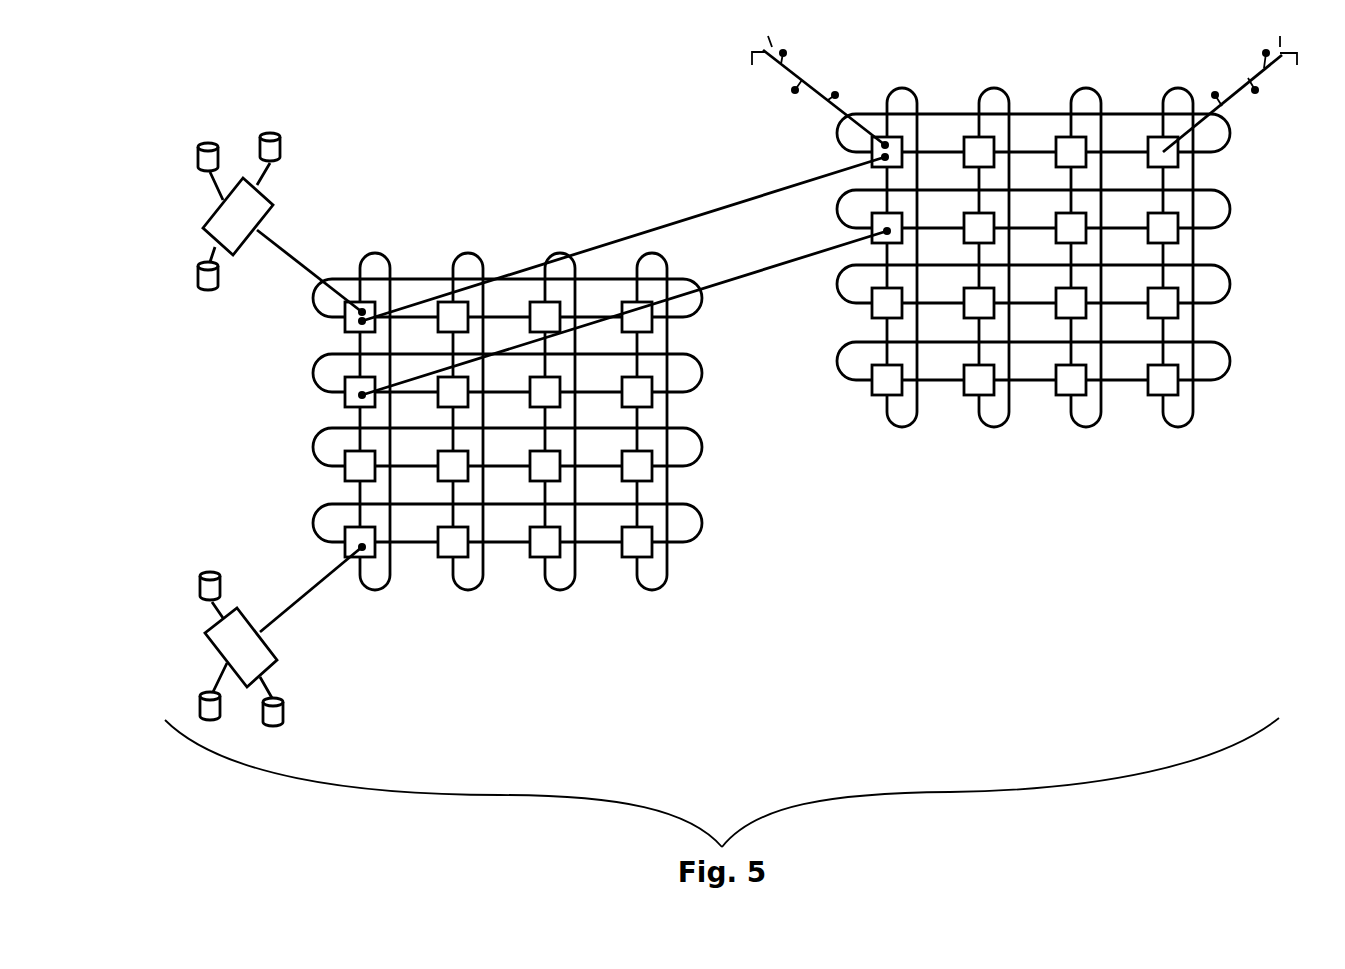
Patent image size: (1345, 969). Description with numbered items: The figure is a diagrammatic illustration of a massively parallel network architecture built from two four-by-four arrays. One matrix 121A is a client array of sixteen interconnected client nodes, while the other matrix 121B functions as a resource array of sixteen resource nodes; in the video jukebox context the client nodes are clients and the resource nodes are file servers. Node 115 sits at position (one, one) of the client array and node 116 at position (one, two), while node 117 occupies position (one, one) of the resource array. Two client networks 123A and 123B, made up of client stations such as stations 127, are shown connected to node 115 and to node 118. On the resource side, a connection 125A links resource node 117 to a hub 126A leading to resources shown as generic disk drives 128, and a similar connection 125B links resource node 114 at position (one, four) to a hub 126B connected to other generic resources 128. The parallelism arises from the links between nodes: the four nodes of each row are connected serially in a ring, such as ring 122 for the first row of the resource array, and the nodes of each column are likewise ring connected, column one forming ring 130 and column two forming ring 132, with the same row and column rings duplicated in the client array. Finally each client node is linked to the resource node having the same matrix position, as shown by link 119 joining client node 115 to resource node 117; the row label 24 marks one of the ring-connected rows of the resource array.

The row line 24 is at (332, 354).
The resource node 114 is at (348, 527).
The client node 115 is at (892, 134).
The client node 116 is at (995, 133).
The resource node 117 is at (378, 310).
The client node 118 is at (1150, 154).
The link 119 is at (737, 200).
The matrix 121A is at (1018, 477).
The matrix 121B is at (495, 200).
The ring 122 is at (330, 277).
The client network 123A is at (792, 68).
The client network 123B is at (1263, 72).
The connection 125A is at (263, 242).
The connection 125B is at (300, 602).
The hub 126A is at (273, 213).
The hub 126B is at (210, 647).
The client station 127 is at (783, 50).
The disk drive 128 is at (207, 140).
The ring 130 is at (393, 262).
The ring 132 is at (482, 583).